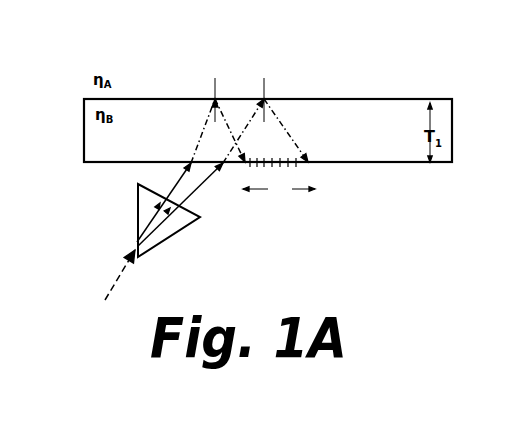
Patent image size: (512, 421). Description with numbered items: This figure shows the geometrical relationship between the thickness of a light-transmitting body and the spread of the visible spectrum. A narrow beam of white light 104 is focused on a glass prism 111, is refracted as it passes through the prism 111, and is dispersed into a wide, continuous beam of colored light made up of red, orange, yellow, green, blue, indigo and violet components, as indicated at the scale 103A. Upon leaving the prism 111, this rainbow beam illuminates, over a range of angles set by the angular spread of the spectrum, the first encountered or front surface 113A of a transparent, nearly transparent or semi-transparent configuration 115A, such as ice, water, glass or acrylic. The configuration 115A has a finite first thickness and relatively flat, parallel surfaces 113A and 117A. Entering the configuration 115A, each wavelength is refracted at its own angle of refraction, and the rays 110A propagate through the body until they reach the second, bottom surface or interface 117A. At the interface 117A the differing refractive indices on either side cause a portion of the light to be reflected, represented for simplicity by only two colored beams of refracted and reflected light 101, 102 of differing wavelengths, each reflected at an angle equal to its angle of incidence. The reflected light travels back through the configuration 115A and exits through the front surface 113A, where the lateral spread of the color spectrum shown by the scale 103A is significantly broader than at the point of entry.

The refracted and reflected light beam 101 is at (208, 110).
The refracted and reflected light beam 102 is at (252, 122).
The scale 103A is at (308, 175).
The narrow beam of white light 104 is at (112, 268).
The refracted rays entering plate 110A is at (222, 164).
The glass prism 111 is at (163, 245).
The front surface 113A is at (432, 164).
The configuration 115A is at (268, 130).
The second surface or interface 117A is at (408, 97).